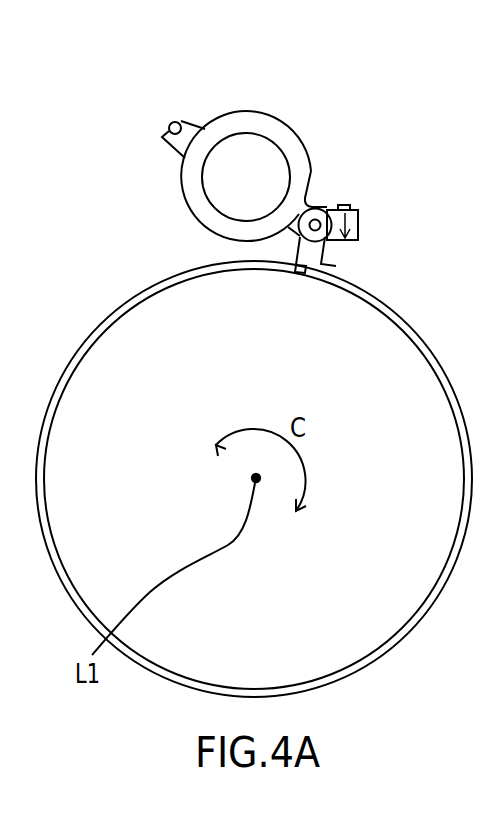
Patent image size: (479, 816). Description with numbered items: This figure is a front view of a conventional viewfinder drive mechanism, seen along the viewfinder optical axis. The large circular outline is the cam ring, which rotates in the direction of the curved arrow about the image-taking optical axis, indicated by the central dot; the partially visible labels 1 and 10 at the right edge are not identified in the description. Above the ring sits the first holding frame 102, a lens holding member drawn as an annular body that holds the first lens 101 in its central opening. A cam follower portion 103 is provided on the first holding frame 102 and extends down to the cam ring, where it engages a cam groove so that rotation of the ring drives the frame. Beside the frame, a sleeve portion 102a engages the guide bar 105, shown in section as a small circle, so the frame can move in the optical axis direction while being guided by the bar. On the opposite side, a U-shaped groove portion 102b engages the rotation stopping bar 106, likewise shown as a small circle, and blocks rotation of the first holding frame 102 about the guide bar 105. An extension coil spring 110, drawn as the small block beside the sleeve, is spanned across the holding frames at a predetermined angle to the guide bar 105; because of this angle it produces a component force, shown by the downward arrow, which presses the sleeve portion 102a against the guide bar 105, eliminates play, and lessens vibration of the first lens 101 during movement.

The photosensitive drum 1 is at (443, 370).
The drum unit 10 is at (261, 479).
The first lens 101 is at (267, 152).
The first holding frame 102 is at (242, 112).
The sleeve portion 102a is at (312, 180).
The U-shaped groove portion 102b is at (182, 119).
The cam follower portion 103 is at (340, 267).
The guide bar 105 is at (319, 222).
The rotation stopping bar 106 is at (168, 124).
The extension coil spring 110 is at (350, 206).